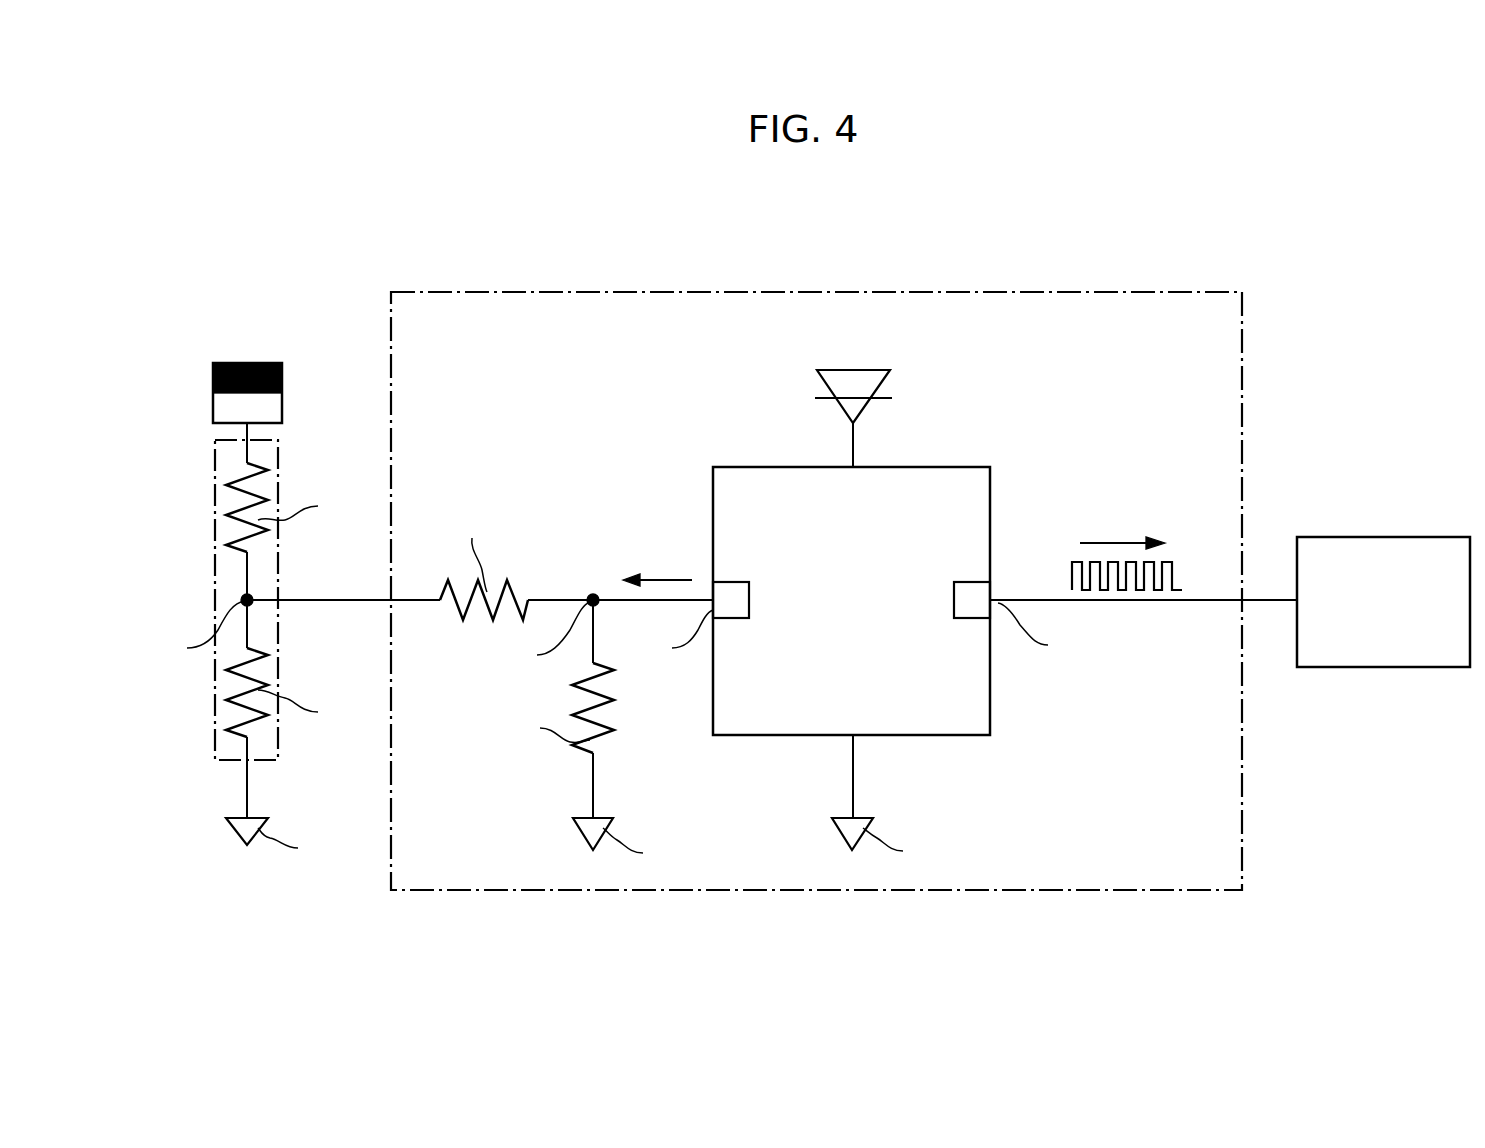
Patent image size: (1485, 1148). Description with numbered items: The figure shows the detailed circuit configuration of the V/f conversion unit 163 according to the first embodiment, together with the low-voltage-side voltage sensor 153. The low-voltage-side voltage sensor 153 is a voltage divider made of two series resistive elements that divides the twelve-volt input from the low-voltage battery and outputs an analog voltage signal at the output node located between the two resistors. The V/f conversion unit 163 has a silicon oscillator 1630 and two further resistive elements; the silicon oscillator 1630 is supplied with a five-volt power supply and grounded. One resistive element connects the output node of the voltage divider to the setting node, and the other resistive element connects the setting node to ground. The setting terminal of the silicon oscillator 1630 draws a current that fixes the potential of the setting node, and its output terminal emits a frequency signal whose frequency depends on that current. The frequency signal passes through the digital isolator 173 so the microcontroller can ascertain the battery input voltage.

The low-voltage-side voltage sensor 153 is at (213, 600).
The V/f conversion unit 163 is at (1140, 292).
The silicon oscillator 1630 is at (770, 467).
The digital isolator 173 is at (1383, 537).